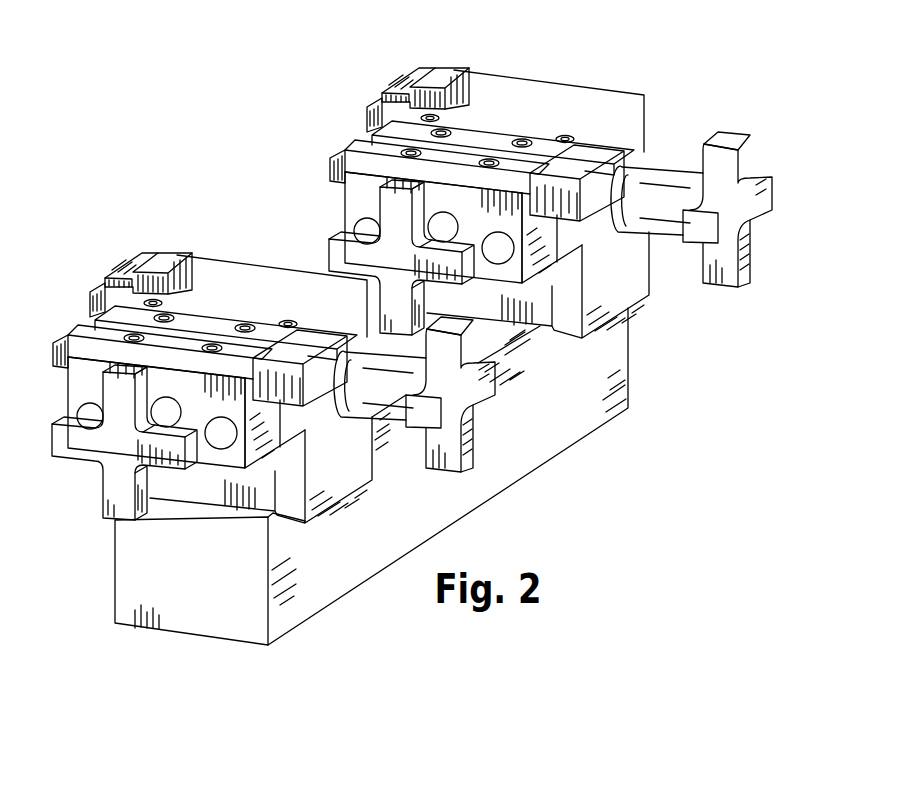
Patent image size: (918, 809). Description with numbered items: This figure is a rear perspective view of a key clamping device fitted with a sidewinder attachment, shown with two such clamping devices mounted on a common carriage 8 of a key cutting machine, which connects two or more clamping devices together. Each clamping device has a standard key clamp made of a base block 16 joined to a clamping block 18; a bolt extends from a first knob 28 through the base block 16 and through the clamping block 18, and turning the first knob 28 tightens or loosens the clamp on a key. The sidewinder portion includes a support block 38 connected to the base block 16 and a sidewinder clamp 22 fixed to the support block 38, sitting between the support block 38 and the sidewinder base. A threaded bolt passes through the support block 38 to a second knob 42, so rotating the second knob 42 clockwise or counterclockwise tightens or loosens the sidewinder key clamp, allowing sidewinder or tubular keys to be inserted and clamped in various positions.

The carriage 8 is at (182, 612).
The base block 16 is at (255, 280).
The clamping block 18 is at (100, 283).
The sidewinder clamp 22 is at (100, 333).
The first knob 28 is at (756, 198).
The support block 38 is at (90, 373).
The second knob 42 is at (80, 447).